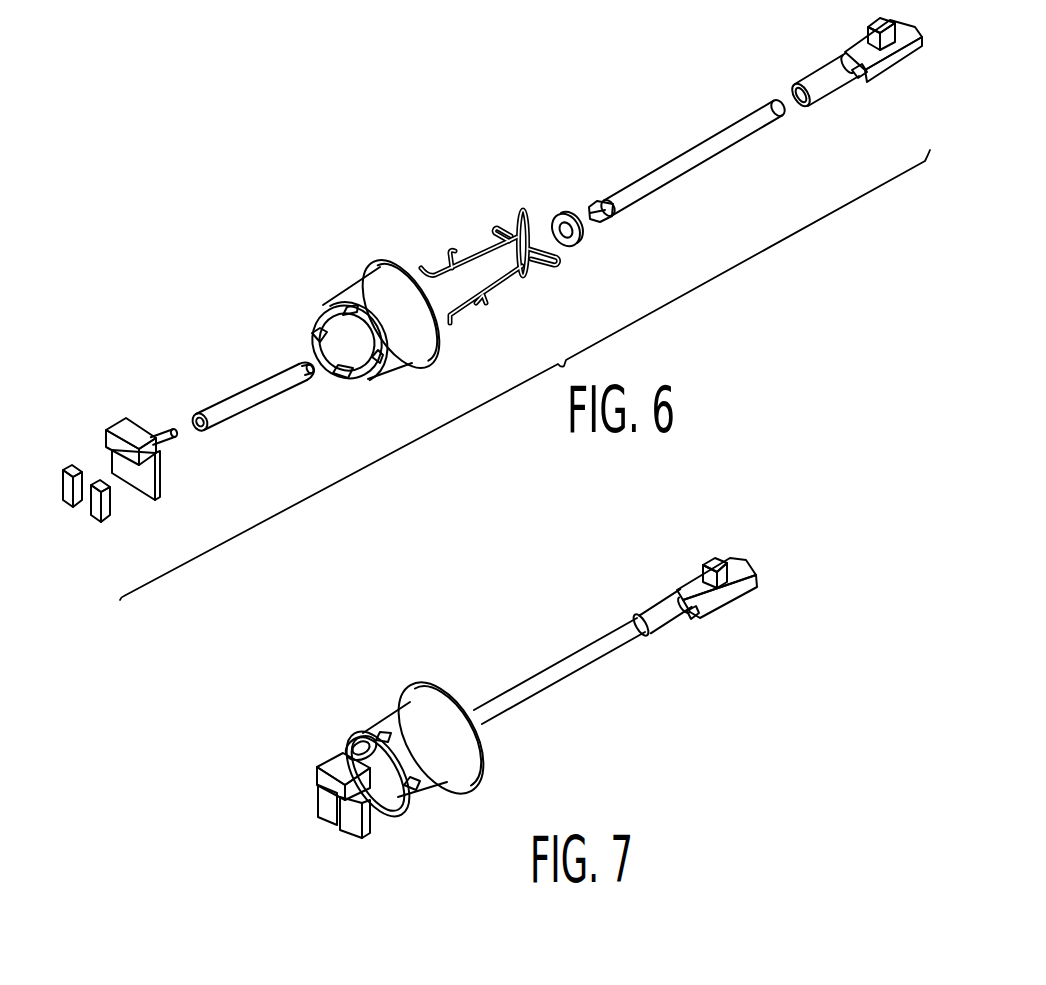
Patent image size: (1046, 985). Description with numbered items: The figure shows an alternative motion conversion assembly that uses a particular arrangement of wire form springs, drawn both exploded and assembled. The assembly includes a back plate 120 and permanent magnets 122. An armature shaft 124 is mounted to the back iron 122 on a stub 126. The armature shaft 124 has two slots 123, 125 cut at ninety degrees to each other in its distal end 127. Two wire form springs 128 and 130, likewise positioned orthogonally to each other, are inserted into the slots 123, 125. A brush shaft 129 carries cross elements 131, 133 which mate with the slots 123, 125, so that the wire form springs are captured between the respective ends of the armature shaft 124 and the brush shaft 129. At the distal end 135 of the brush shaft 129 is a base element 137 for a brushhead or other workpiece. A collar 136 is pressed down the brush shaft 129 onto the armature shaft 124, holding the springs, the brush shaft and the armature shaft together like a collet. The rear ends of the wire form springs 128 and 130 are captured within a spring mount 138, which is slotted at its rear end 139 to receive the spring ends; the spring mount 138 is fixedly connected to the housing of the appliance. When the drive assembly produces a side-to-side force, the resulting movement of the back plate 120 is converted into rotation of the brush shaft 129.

In FIG. 6, the back plate 120 is at (160, 468).
In FIG. 7, the back plate 120 is at (320, 757).
In FIG. 6, the permanent magnets 122 is at (97, 522).
In FIG. 7, the permanent magnets 122 is at (350, 840).
In FIG. 6, the slot 123 is at (291, 361).
In FIG. 6, the armature shaft 124 is at (245, 413).
In FIG. 7, the armature shaft 124 is at (393, 820).
In FIG. 6, the slot 125 is at (312, 392).
In FIG. 6, the stub 126 is at (163, 432).
In FIG. 6, the distal end 127 is at (304, 355).
In FIG. 6, the wire form spring 128 is at (560, 250).
In FIG. 6, the brush shaft 129 is at (717, 158).
In FIG. 7, the brush shaft 129 is at (547, 668).
In FIG. 6, the wire form spring 130 is at (523, 283).
In FIG. 6, the cross element 131 is at (598, 222).
In FIG. 6, the cross element 133 is at (598, 195).
In FIG. 6, the distal end 135 is at (829, 100).
In FIG. 6, the collar 136 is at (566, 207).
In FIG. 7, the collar 136 is at (402, 693).
In FIG. 6, the base element 137 is at (845, 52).
In FIG. 7, the base element 137 is at (690, 578).
In FIG. 6, the spring mount 138 is at (387, 265).
In FIG. 6, the rear end 139 is at (378, 337).
In FIG. 7, the rear end 139 is at (355, 733).